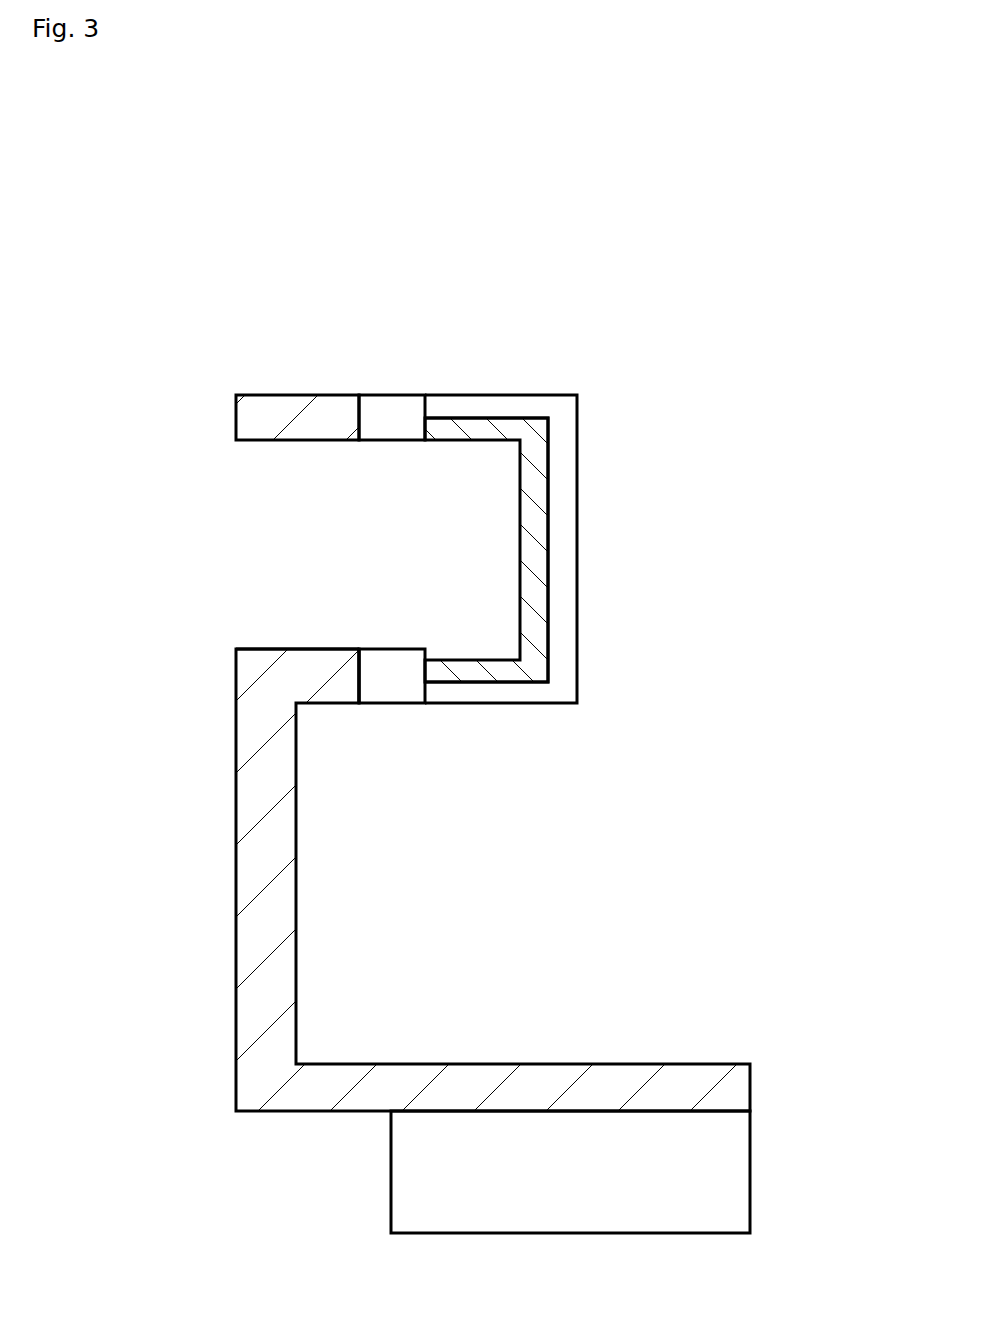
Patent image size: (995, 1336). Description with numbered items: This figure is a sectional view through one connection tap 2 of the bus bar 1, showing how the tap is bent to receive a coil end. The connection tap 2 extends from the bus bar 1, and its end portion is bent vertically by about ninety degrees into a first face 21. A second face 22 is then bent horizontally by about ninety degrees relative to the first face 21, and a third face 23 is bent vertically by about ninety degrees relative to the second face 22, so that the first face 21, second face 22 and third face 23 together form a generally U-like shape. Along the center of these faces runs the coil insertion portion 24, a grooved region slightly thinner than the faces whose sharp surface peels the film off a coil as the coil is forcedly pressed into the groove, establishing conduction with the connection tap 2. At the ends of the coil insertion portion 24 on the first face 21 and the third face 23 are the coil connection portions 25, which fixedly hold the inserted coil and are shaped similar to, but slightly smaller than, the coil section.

The bus bar 1 is at (720, 1177).
The connection tap 2 is at (257, 945).
The first face 21 is at (317, 672).
The second face 22 is at (563, 497).
The third face 23 is at (282, 410).
The coil insertion portion 24 is at (543, 593).
The coil connection portion 25 is at (395, 415).